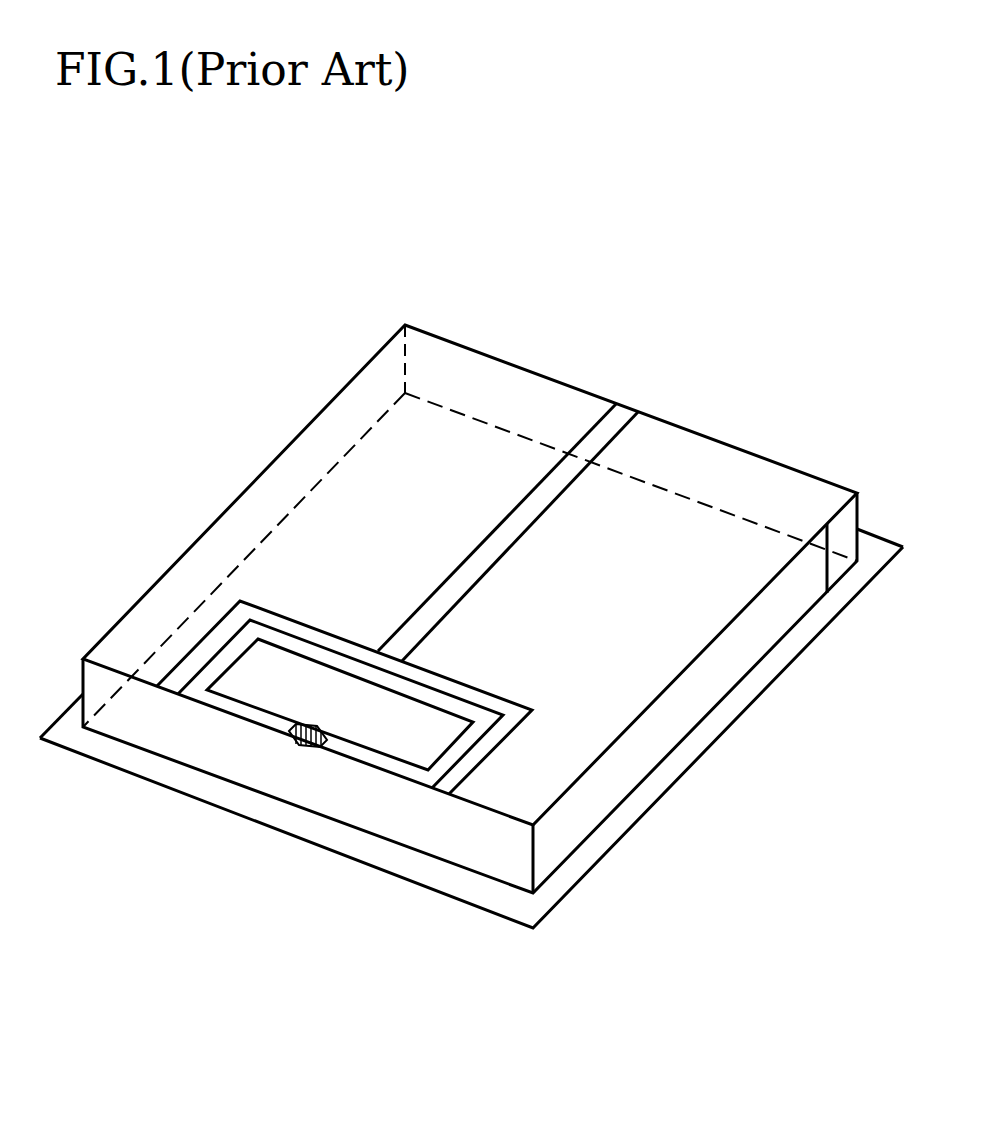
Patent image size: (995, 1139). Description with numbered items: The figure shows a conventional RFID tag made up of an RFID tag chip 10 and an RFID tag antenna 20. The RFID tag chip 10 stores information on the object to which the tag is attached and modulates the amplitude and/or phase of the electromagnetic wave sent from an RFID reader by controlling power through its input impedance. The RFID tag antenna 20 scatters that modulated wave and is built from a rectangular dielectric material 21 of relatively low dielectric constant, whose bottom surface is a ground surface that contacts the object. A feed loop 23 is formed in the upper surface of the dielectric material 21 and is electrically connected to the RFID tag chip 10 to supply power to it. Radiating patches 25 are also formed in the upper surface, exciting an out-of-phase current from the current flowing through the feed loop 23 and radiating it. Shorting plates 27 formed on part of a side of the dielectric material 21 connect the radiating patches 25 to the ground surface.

The RFID tag chip 10 is at (297, 740).
The RFID tag antenna 20 is at (340, 394).
The dielectric material 21 is at (624, 408).
The feed loop 23 is at (387, 768).
The radiating patches 25 is at (525, 600).
The shorting plates 27 is at (842, 548).